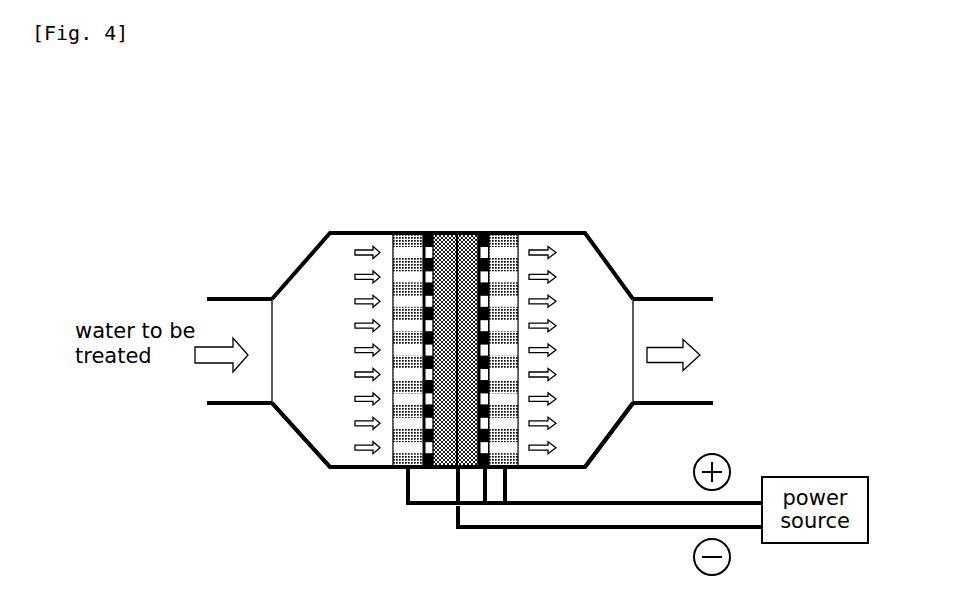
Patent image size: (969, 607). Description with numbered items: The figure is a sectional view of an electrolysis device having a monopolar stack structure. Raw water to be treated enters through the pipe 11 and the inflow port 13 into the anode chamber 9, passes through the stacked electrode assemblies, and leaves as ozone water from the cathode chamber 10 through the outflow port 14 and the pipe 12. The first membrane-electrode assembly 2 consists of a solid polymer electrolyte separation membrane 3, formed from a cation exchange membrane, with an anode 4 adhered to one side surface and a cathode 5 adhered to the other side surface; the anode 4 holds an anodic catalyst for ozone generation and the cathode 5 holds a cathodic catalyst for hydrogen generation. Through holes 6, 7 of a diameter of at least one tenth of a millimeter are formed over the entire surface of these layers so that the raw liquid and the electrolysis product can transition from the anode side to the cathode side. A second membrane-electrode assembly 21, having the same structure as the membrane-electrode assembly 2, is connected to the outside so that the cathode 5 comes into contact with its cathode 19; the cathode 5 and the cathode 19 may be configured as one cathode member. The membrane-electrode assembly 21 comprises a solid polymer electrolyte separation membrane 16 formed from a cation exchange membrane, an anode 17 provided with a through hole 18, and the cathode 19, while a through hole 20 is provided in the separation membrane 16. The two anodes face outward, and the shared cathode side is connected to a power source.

The membrane-electrode assembly 2 is at (393, 278).
The solid polymer electrolyte separation membrane 3 is at (428, 233).
The anode 4 is at (403, 240).
The cathode 5 is at (445, 233).
The through hole 6 is at (423, 470).
The through hole 7 is at (398, 250).
The anode chamber 9 is at (307, 393).
The cathode chamber 10 is at (598, 385).
The pipe 11 is at (223, 298).
The pipe 12 is at (677, 298).
The inflow port 13 is at (270, 343).
The outflow port 14 is at (635, 332).
The solid polymer electrolyte separation membrane 16 is at (488, 233).
The anode 17 is at (507, 235).
The through hole 18 is at (515, 252).
The cathode 19 is at (472, 233).
The through hole 20 is at (482, 470).
The membrane-electrode assembly 21 is at (535, 278).